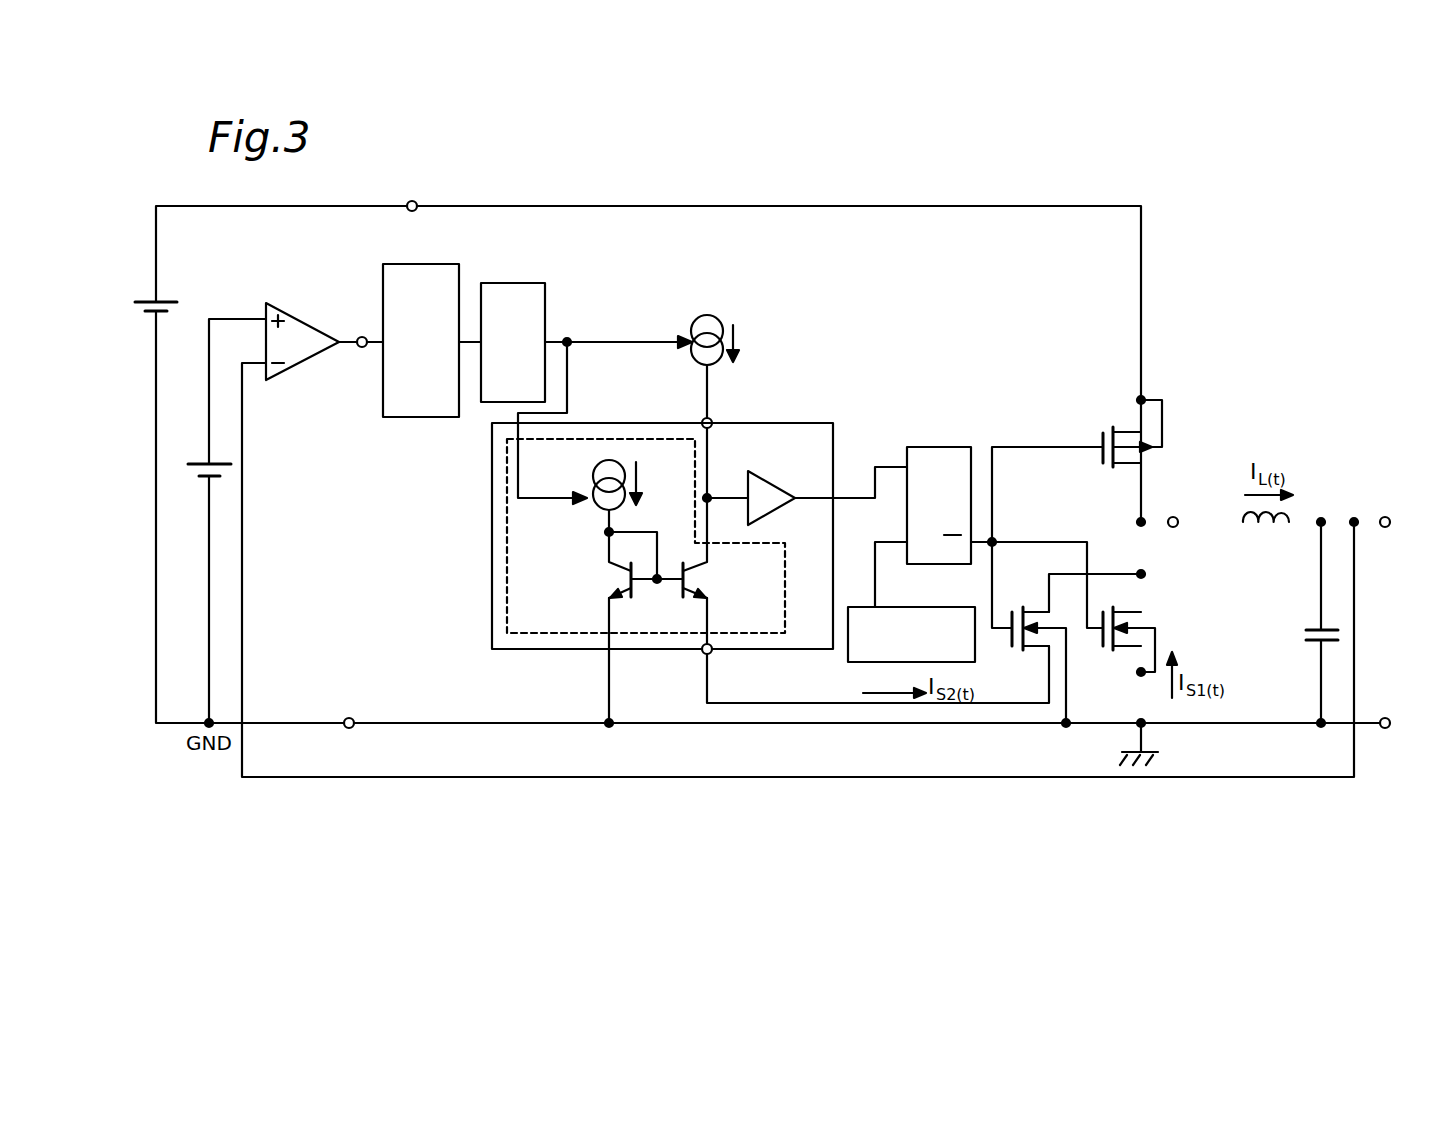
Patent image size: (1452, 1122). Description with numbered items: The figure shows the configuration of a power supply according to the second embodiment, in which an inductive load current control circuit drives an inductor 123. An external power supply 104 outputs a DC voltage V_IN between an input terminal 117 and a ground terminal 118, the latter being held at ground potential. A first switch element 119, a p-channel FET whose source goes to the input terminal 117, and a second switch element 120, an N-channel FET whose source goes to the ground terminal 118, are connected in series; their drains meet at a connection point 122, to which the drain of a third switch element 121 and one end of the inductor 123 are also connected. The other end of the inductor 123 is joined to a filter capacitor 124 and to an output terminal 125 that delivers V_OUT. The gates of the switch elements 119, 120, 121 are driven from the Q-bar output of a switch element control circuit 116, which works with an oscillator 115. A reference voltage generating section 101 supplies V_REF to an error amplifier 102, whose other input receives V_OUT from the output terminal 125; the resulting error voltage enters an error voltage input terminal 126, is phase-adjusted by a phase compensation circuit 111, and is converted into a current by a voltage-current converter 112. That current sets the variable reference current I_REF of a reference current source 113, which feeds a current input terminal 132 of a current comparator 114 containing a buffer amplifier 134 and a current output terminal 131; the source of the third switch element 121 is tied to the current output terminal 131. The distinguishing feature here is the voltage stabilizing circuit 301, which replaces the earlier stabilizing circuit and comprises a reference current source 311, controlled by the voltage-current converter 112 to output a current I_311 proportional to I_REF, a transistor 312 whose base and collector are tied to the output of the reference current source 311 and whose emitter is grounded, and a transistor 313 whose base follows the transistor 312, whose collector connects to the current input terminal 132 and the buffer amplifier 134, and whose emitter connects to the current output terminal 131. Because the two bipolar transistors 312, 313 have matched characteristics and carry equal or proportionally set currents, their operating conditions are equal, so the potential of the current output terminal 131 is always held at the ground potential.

The reference voltage generating section 101 is at (200, 463).
The error amplifier 102 is at (300, 316).
The external power supply 104 is at (152, 300).
The phase compensation circuit 111 is at (430, 264).
The voltage-current converter 112 is at (522, 283).
The reference current source 113 is at (705, 316).
The current comparator 114 is at (835, 445).
The oscillator 115 is at (920, 607).
The switch element control circuit 116 is at (922, 447).
The input terminal 117 is at (410, 202).
The ground terminal 118 is at (349, 717).
The first switch element 119 is at (1135, 457).
The second switch element 120 is at (1125, 634).
The third switch element 121 is at (1045, 638).
The connection point 122 is at (1173, 530).
The inductor 123 is at (1267, 531).
The filter capacitor 124 is at (1306, 636).
The output terminal 125 is at (1385, 516).
The error voltage input terminal 126 is at (361, 349).
The current output terminal 131 is at (702, 652).
The current input terminal 132 is at (713, 421).
The buffer amplifier 134 is at (762, 478).
The voltage stabilizing circuit 301 is at (507, 578).
The reference current source 311 is at (594, 482).
The transistor 312 is at (618, 577).
The transistor 313 is at (700, 578).